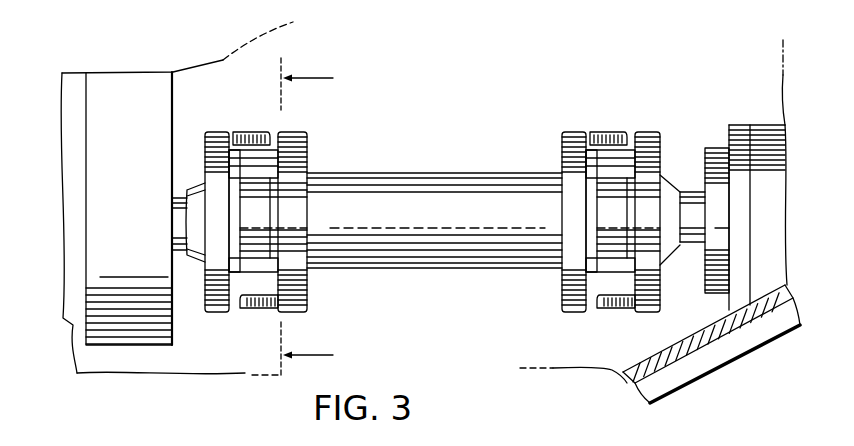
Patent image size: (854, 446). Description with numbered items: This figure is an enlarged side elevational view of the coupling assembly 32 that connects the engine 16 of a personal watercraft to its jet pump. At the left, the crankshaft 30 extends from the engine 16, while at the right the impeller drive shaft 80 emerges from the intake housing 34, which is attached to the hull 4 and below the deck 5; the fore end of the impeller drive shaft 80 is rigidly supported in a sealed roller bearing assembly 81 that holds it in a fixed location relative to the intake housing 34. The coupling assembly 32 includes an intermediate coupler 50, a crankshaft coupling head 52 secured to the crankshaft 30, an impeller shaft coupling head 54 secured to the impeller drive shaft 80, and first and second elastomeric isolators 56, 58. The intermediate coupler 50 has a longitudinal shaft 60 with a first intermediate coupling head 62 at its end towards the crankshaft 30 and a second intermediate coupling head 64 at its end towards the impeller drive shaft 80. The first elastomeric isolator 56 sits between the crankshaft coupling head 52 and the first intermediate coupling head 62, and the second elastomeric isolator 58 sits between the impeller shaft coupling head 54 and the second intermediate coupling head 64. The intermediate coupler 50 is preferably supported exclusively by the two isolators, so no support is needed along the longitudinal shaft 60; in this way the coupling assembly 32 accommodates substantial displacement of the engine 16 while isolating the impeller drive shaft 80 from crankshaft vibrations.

The hull 4 is at (632, 380).
The deck 5 is at (298, 216).
The engine 16 is at (110, 213).
The crankshaft 30 is at (180, 196).
The coupling assembly 32 is at (413, 69).
The intake housing 34 is at (762, 212).
The intermediate coupler 50 is at (403, 180).
The crankshaft coupling head 52 is at (223, 136).
The impeller shaft coupling head 54 is at (647, 147).
The first elastomeric isolator 56 is at (262, 137).
The second elastomeric isolator 58 is at (617, 130).
The longitudinal shaft 60 is at (461, 210).
The first intermediate coupling head 62 is at (288, 168).
The second intermediate coupling head 64 is at (572, 130).
The impeller drive shaft 80 is at (692, 190).
The sealed roller bearing assembly 81 is at (741, 150).